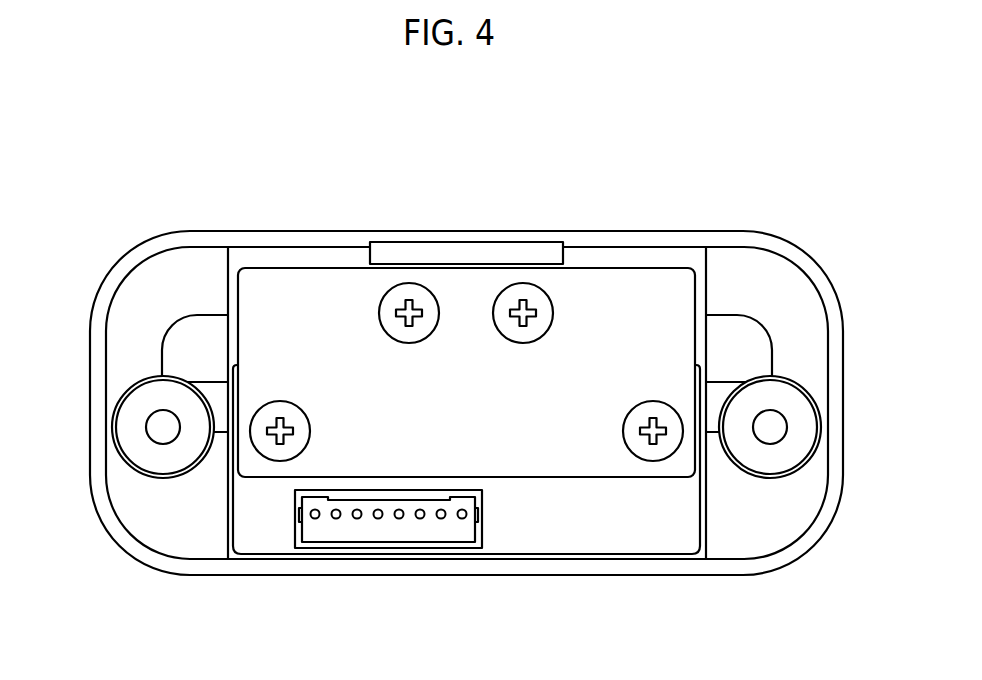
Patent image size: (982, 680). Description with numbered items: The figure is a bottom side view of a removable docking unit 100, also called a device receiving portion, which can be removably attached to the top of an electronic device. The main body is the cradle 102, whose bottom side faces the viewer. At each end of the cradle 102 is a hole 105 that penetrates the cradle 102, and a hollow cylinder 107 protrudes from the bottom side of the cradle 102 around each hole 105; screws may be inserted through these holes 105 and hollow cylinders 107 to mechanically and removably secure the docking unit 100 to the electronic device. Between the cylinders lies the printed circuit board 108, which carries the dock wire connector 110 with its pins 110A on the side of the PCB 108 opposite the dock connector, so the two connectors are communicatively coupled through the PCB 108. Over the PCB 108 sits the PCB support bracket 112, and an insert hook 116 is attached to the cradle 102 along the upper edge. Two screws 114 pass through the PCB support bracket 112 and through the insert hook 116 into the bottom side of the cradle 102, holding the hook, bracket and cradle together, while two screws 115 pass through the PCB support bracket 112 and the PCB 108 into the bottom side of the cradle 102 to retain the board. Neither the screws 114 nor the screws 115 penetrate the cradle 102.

The removable docking unit 100 is at (150, 188).
The cradle 102 is at (805, 255).
The holes 105 is at (163, 427).
The hollow cylinders 107 is at (148, 457).
The printed circuit board 108 is at (582, 530).
The dock wire connector 110 is at (383, 527).
The pins 110A is at (438, 514).
The PCB support bracket 112 is at (302, 320).
The screws 114 is at (403, 302).
The screws 115 is at (268, 450).
The insert hook 116 is at (418, 252).